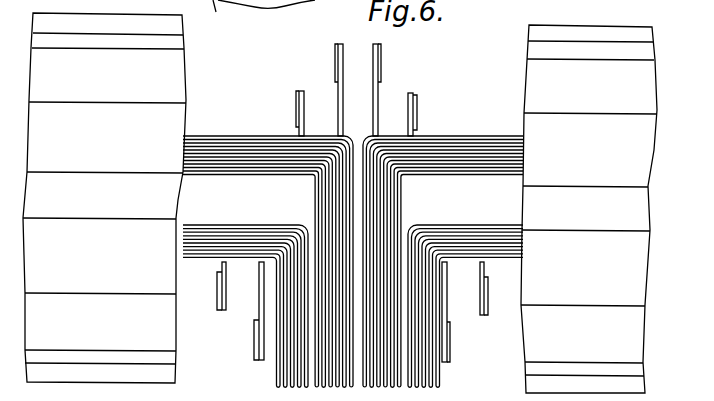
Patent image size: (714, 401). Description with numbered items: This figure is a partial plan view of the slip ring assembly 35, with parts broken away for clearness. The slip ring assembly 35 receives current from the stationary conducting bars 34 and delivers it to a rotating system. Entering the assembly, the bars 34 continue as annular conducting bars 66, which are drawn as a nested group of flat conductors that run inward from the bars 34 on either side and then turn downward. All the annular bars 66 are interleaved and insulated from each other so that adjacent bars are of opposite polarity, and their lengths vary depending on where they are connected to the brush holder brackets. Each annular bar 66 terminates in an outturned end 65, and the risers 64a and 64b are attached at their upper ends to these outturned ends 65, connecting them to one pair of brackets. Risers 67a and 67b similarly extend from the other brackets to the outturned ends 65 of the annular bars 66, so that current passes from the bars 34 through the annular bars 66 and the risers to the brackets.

The bars 34 is at (353, 197).
The slip ring assembly 35 is at (656, 139).
The riser 64a is at (418, 104).
The riser 64b is at (335, 57).
The outturned ends 65 is at (407, 119).
The annular conducting bars 66 is at (476, 145).
The riser 67a is at (381, 52).
The riser 67b is at (299, 108).